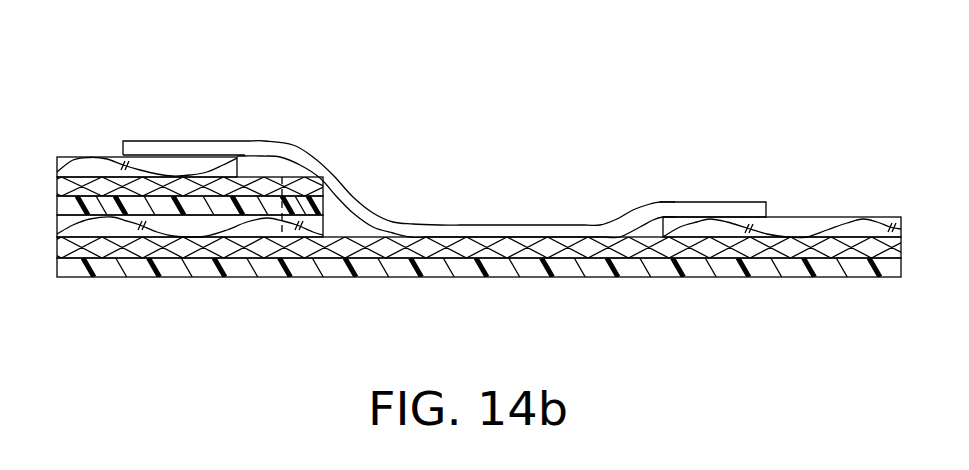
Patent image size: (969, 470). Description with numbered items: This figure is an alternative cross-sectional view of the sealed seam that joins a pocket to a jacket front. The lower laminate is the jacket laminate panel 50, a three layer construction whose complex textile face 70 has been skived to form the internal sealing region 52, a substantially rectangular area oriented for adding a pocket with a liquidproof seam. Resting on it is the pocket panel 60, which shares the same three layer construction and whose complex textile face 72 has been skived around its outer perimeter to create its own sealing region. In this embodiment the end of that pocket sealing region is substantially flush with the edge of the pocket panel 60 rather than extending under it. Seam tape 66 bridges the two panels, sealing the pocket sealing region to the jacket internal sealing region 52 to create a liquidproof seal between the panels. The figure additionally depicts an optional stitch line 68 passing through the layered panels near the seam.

The laminate panel 50 is at (52, 217).
The internal sealing region 52 is at (413, 237).
The pocket panel 60 is at (52, 155).
The seam tape 66 is at (727, 207).
The stitch line 68 is at (283, 229).
The complex textile face 70 is at (810, 217).
The complex textile face 72 is at (100, 154).